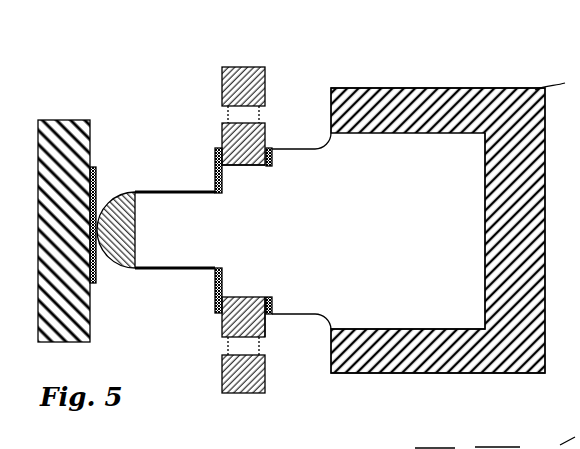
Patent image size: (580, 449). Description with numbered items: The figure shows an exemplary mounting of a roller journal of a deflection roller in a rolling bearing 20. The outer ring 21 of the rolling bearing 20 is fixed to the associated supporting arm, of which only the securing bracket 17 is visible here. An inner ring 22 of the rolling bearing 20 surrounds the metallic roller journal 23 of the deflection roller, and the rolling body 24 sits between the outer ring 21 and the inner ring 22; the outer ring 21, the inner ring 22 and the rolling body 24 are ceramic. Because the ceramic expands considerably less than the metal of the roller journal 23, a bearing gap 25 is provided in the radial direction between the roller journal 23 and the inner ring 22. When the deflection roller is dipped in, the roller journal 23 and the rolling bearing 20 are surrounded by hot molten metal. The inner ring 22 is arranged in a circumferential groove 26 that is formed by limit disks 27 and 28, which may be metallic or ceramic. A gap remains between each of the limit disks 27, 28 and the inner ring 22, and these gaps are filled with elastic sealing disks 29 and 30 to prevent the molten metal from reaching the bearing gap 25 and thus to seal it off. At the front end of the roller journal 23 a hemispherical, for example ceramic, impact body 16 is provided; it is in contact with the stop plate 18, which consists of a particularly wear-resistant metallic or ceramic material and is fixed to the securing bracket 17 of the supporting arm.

The impact body 16 is at (117, 192).
The securing bracket 17 is at (78, 120).
The stop plate 18 is at (97, 278).
The rolling bearing 20 is at (284, 78).
The outer ring 21 is at (246, 72).
The inner ring 22 is at (262, 133).
The roller journal 23 is at (305, 300).
The rolling body 24 is at (237, 347).
The bearing gap 25 is at (265, 166).
The circumferential groove 26 is at (213, 136).
The limit disk 27 is at (274, 158).
The limit disk 28 is at (216, 162).
The elastic sealing disk 29 is at (271, 315).
The elastic sealing disk 30 is at (219, 314).